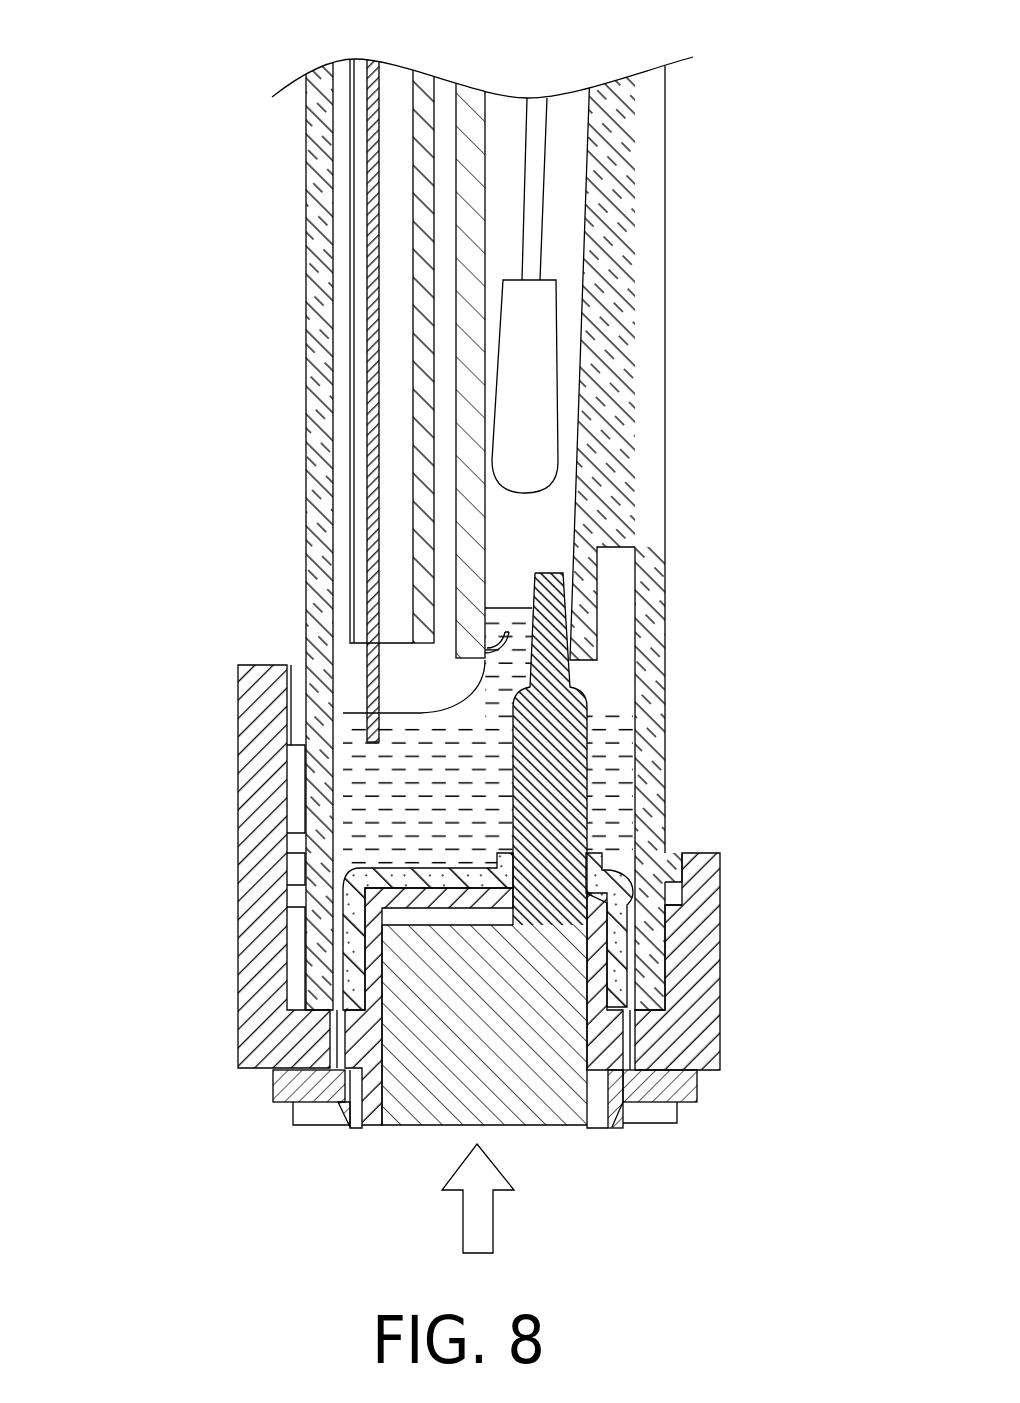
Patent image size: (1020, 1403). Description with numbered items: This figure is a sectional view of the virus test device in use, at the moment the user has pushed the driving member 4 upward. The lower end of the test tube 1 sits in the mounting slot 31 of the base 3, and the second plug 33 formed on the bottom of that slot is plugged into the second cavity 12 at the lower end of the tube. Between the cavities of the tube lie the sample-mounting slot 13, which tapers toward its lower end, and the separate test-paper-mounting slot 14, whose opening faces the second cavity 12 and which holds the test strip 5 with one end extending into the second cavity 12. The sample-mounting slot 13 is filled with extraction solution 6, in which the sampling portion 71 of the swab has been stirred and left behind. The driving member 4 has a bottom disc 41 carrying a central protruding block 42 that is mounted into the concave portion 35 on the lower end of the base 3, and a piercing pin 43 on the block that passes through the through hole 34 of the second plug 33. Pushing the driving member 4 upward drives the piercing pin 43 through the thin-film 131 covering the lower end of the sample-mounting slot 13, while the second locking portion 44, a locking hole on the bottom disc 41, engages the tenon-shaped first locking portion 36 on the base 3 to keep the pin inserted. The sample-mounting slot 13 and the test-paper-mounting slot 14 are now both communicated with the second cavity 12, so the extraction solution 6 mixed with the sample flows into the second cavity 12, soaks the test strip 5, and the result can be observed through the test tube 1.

The test tube 1 is at (318, 205).
The base 3 is at (690, 942).
The driving member 4 is at (527, 1128).
The test strip 5 is at (368, 333).
The extraction solution 6 is at (355, 723).
The second cavity 12 is at (650, 753).
The sample-mounting slot 13 is at (588, 125).
The test-paper-mounting slot 14 is at (410, 88).
The mounting slot 31 is at (315, 983).
The second plug 33 is at (347, 932).
The through hole 34 is at (570, 882).
The concave portion 35 is at (590, 1046).
The first locking portion 36 is at (618, 1130).
The bottom disc 41 is at (290, 1088).
The protruding block 42 is at (403, 1108).
The piercing pin 43 is at (568, 702).
The second locking portion 44 is at (345, 1125).
The sampling portion 71 is at (528, 410).
The thin-film 131 is at (505, 632).